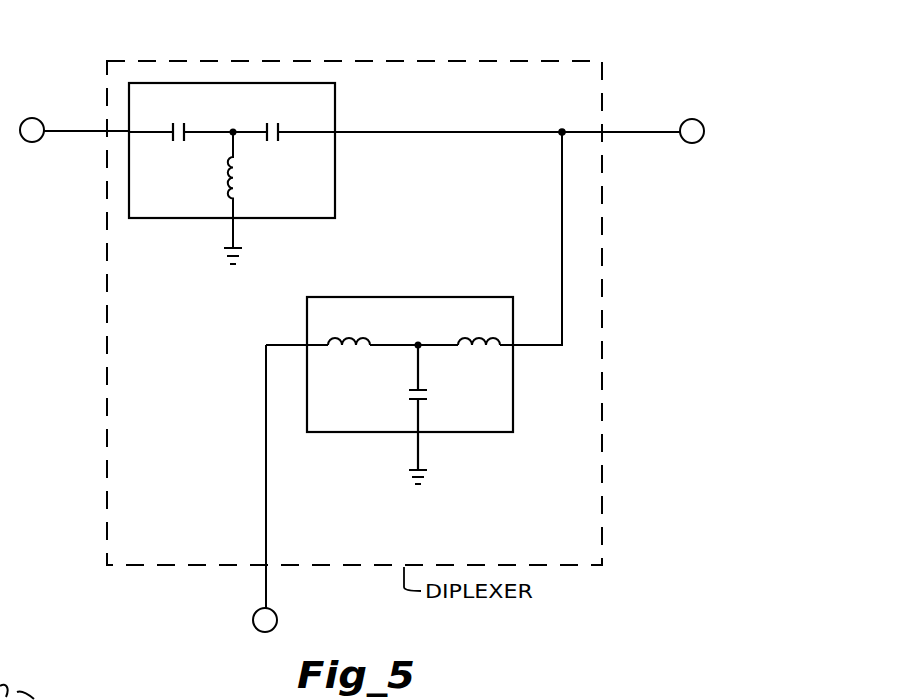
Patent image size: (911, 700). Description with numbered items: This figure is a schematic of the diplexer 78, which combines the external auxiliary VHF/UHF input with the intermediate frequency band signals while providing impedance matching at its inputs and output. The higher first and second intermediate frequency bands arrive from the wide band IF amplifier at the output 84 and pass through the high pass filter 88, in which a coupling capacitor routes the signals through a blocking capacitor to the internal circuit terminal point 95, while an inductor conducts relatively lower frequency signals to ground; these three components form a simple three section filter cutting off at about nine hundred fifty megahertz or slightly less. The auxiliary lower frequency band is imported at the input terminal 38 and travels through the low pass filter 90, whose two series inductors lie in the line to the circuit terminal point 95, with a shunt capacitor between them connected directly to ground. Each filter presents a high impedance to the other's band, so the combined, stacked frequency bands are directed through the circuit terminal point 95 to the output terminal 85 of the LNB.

The diplexer 78 is at (152, 58).
The output from the wide band IF amplifier 84 is at (41, 119).
The output terminal 85 is at (701, 121).
The high pass filter 88 is at (335, 113).
The low pass filter 90 is at (363, 433).
The circuit terminal point 95 is at (562, 128).
The input terminal 38 is at (277, 618).